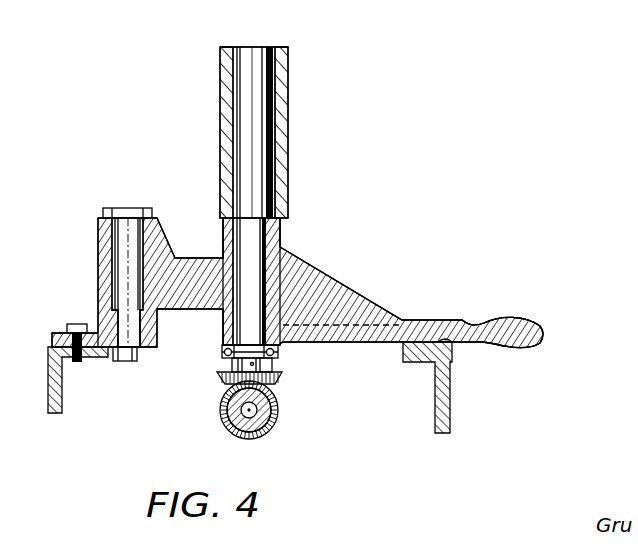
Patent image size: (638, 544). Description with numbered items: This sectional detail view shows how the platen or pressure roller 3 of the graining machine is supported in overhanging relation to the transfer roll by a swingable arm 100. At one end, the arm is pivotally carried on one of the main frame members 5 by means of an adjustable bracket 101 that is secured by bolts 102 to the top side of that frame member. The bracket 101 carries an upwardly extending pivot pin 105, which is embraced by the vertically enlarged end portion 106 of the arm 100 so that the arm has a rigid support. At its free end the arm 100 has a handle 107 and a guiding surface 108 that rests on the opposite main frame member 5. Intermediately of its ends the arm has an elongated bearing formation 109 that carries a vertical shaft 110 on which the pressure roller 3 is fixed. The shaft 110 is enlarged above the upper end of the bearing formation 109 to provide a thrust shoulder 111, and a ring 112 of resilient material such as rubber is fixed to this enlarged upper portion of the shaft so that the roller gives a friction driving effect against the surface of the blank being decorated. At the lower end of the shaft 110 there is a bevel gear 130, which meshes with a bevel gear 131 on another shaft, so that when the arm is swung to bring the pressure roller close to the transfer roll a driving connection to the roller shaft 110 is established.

The platen or pressure roller 3 is at (288, 47).
The ring of resilient material 112 is at (292, 88).
The thrust shoulder 111 is at (253, 215).
The elongated bearing formation 109 is at (283, 243).
The vertical shaft 110 is at (258, 272).
The swingable arm 100 is at (320, 293).
The pivot pin 105 is at (130, 224).
The vertically enlarged end portion 106 is at (100, 248).
The adjustable bracket 101 is at (97, 323).
The bolts 102 is at (74, 330).
The main frame member 5 is at (63, 403).
The handle 107 is at (523, 322).
The guiding surface 108 is at (450, 342).
The bevel gear 130 is at (278, 366).
The bevel gear 131 is at (278, 415).